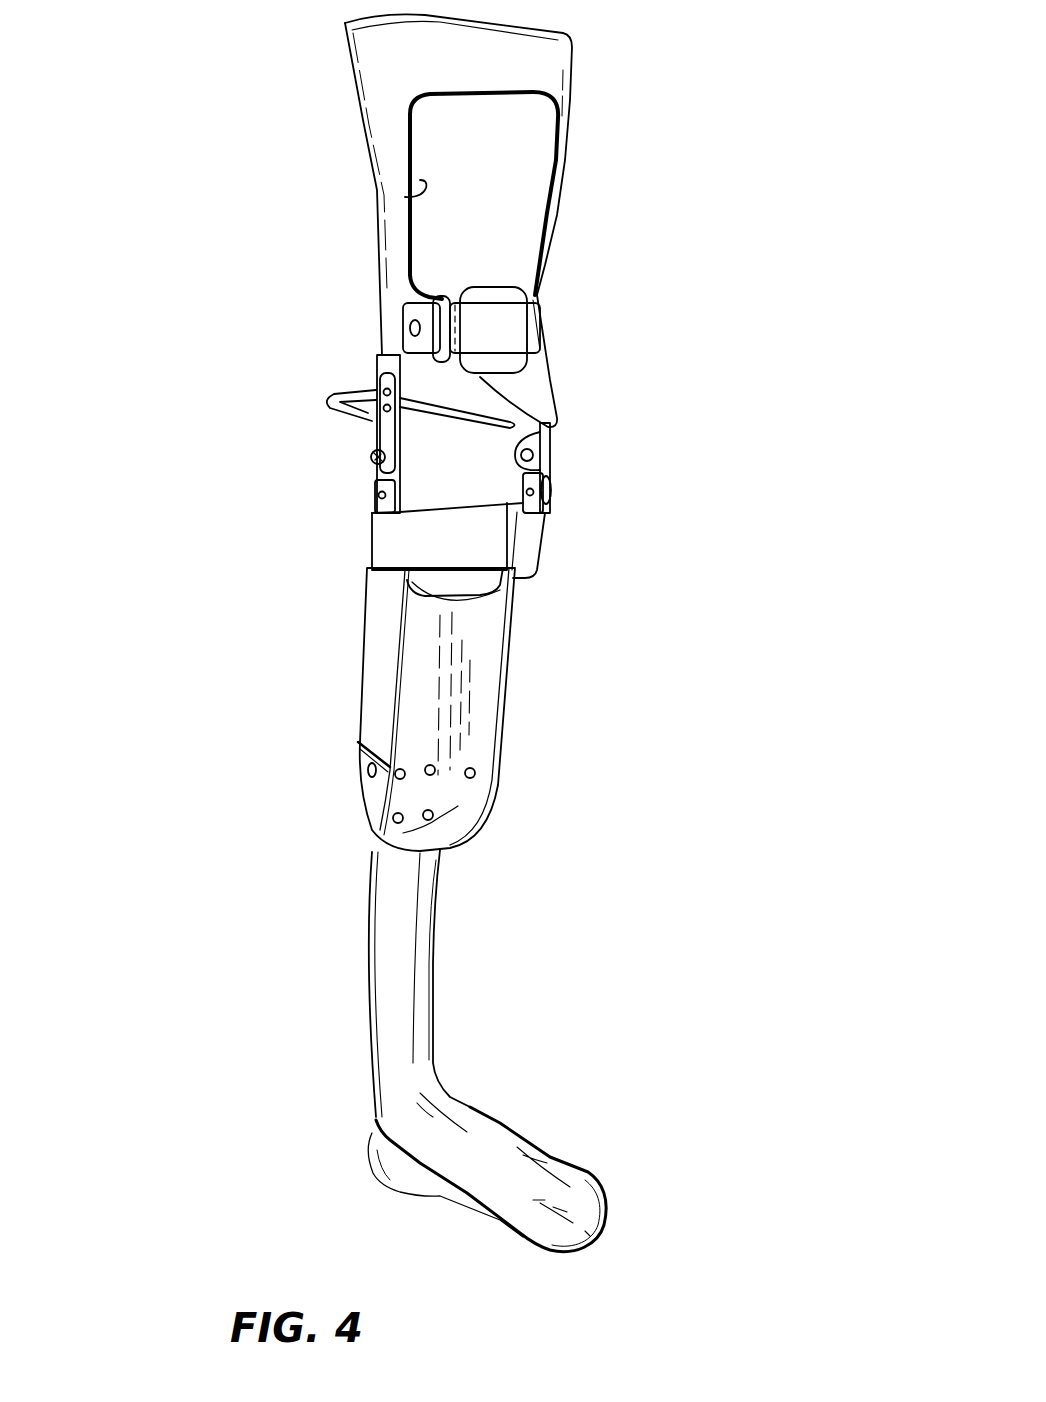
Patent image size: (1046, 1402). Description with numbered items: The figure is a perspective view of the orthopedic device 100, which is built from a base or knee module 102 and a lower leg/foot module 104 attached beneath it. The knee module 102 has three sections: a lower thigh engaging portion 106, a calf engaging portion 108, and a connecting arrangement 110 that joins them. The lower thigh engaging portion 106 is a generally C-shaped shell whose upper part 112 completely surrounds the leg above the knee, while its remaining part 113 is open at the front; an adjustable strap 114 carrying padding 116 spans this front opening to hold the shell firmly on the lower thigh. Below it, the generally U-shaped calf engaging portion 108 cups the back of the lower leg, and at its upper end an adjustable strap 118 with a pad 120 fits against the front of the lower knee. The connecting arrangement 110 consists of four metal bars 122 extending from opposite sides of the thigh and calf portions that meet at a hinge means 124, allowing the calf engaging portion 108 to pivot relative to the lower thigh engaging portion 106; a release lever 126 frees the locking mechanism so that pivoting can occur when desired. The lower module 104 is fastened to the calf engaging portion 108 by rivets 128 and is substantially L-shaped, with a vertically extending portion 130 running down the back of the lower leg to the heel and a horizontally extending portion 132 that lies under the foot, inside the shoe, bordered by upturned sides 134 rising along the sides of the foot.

The orthopedic device 100 is at (462, 640).
The knee module 102 is at (553, 492).
The lower leg/foot module 104 is at (532, 1058).
The lower thigh engaging portion 106 is at (530, 160).
The calf engaging portion 108 is at (491, 709).
The connecting arrangement 110 is at (299, 446).
The upper part 112 is at (538, 63).
The remaining part 113 is at (405, 197).
The adjustable strap 114 is at (517, 323).
The padding 116 is at (512, 293).
The adjustable strap 118 is at (520, 536).
The pad 120 is at (487, 578).
The metal bars 122 is at (383, 380).
The hinge means 124 is at (368, 457).
The release mechanism or lever 126 is at (323, 396).
The rivets 128 is at (478, 774).
The vertically extending portion 130 is at (437, 885).
The horizontally extending portion 132 is at (590, 1207).
The upturned sides 134 is at (517, 1120).